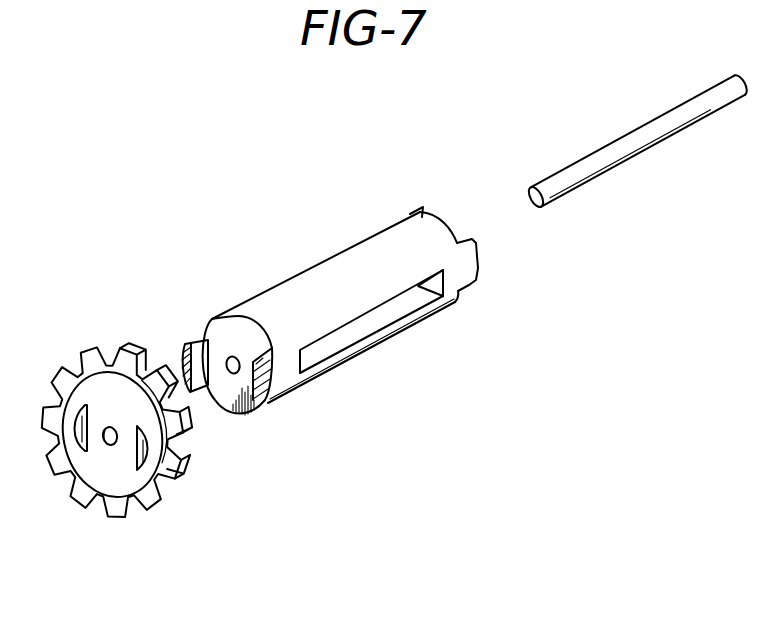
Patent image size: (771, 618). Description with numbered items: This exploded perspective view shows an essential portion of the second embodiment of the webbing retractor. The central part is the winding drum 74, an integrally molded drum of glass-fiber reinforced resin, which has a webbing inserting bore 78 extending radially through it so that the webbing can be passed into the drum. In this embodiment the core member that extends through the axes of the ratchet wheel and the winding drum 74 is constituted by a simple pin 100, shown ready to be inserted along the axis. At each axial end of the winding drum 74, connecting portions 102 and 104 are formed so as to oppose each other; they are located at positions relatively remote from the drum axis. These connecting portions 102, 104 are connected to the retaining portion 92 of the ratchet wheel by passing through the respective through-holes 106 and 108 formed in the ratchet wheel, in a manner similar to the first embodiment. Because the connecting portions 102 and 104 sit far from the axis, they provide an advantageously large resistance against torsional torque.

The winding drum 74 is at (322, 280).
The webbing inserting bore 78 is at (373, 325).
The retaining portion 92 is at (133, 492).
The pin 100 is at (607, 144).
The connecting portion 102 is at (202, 352).
The connecting portion 104 is at (270, 402).
The through-hole 106 is at (79, 440).
The through-hole 108 is at (143, 452).